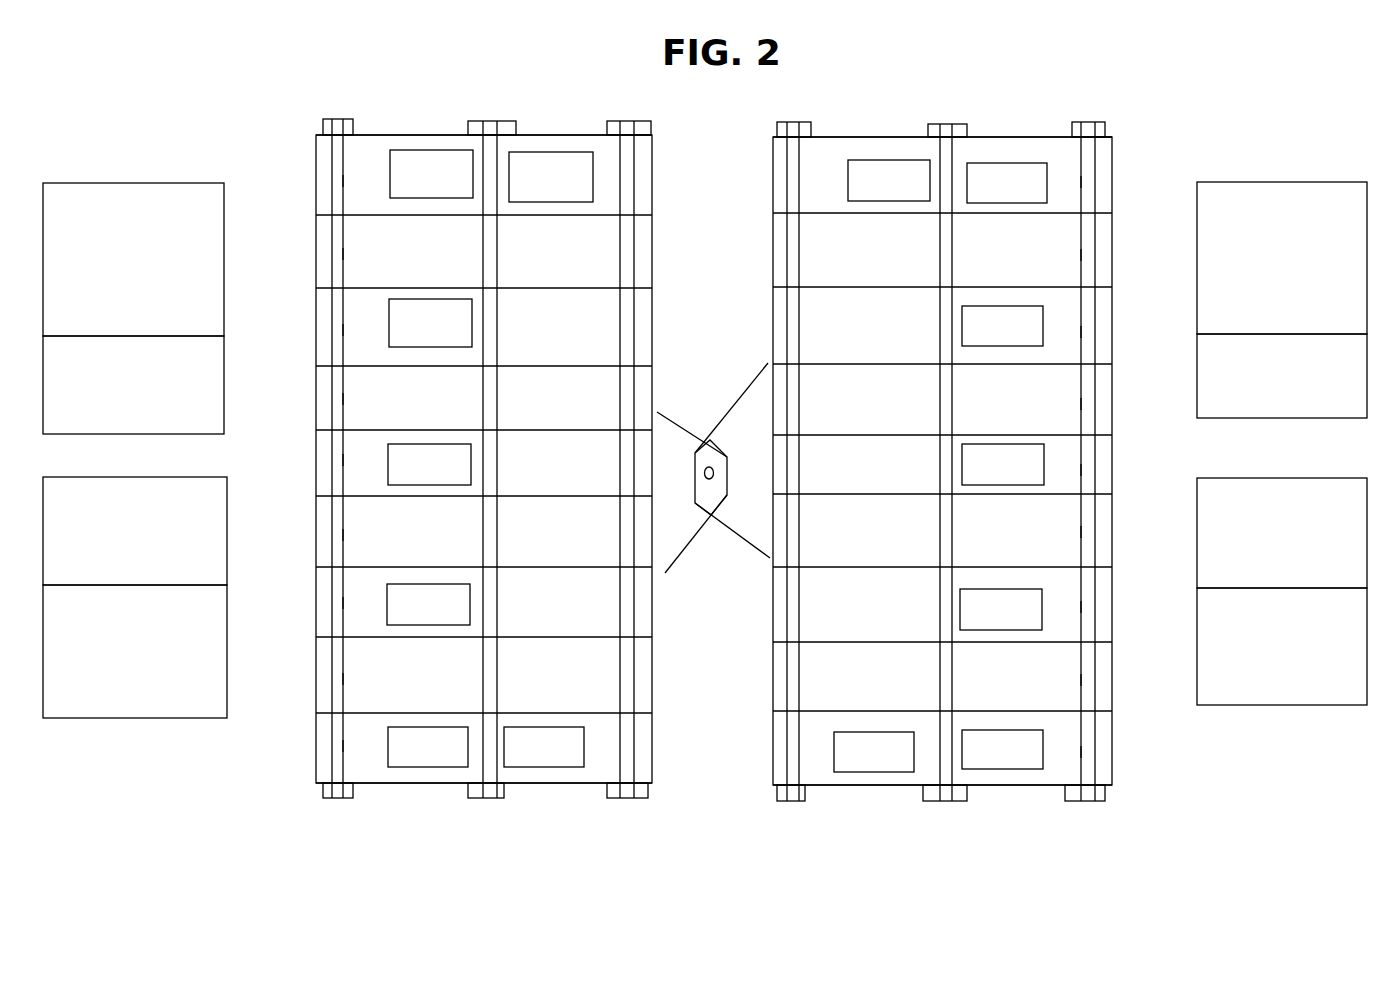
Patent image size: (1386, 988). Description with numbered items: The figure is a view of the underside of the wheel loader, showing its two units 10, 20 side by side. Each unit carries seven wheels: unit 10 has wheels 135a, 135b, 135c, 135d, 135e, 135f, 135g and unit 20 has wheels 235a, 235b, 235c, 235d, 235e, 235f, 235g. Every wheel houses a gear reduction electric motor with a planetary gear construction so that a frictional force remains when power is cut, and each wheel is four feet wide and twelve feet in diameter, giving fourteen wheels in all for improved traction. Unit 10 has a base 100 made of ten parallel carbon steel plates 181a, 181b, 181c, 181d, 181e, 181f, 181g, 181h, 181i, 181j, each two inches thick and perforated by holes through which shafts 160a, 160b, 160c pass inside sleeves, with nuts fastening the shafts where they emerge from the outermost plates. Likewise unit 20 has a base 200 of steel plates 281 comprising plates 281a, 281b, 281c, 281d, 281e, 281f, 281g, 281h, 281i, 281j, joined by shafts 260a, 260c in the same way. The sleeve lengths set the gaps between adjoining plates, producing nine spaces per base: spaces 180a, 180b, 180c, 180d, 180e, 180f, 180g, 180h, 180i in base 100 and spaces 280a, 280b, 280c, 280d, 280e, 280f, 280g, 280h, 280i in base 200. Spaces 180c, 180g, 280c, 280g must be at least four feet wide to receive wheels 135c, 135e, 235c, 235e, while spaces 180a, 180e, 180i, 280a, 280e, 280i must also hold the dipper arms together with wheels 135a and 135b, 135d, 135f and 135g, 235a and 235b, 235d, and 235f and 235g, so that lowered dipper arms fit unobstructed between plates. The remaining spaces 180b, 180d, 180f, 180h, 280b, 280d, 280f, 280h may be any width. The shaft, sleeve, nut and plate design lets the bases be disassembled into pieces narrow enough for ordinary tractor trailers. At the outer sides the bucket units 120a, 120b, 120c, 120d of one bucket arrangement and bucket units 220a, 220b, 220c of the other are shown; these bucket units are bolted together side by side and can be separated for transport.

The unit 10 is at (474, 920).
The unit 20 is at (966, 912).
The base 100 is at (652, 107).
The base 200 is at (1110, 102).
The bucket unit 120a is at (133, 259).
The bucket unit 120b is at (133, 385).
The bucket unit 120c is at (135, 531).
The bucket unit 120d is at (135, 651).
The bucket unit 220a is at (1282, 258).
The bucket unit 220b is at (1282, 376).
The bucket unit 220c is at (1282, 591).
The wheel 135a is at (431, 174).
The wheel 135b is at (551, 177).
The wheel 135c is at (430, 323).
The wheel 135d is at (429, 464).
The wheel 135e is at (428, 604).
The wheel 135f is at (428, 747).
The wheel 135g is at (544, 747).
The wheel 235a is at (889, 180).
The wheel 235b is at (1007, 183).
The wheel 235c is at (1002, 326).
The wheel 235d is at (1003, 464).
The wheel 235e is at (1001, 609).
The wheel 235f is at (1002, 749).
The wheel 235g is at (874, 752).
The shaft 160a is at (334, 766).
The shaft 160b is at (490, 767).
The shaft 160c is at (623, 777).
The shaft 260a is at (945, 773).
The shaft 260c is at (793, 777).
The space 180a is at (350, 181).
The space 180b is at (350, 254).
The space 180c is at (350, 330).
The space 180d is at (350, 399).
The space 180e is at (353, 460).
The space 180f is at (350, 535).
The space 180g is at (356, 603).
The space 180h is at (357, 679).
The space 180i is at (350, 746).
The space 280a is at (1068, 182).
The space 280b is at (1068, 255).
The space 280c is at (1068, 332).
The space 280d is at (1068, 404).
The space 280e is at (1068, 470).
The space 280f is at (1068, 532).
The space 280g is at (1068, 607).
The space 280h is at (1068, 680).
The space 280i is at (1068, 752).
The steel plate 181a is at (580, 135).
The steel plate 181b is at (554, 218).
The steel plate 181c is at (555, 291).
The steel plate 181d is at (554, 369).
The steel plate 181e is at (554, 433).
The steel plate 181f is at (552, 499).
The steel plate 181g is at (551, 570).
The steel plate 181h is at (545, 640).
The steel plate 181i is at (595, 712).
The steel plate 181j is at (555, 786).
The steel plate 281 is at (1112, 133).
The steel plate 281a is at (1023, 137).
The steel plate 281b is at (852, 216).
The steel plate 281c is at (854, 290).
The steel plate 281d is at (853, 367).
The steel plate 281e is at (853, 438).
The steel plate 281f is at (854, 497).
The steel plate 281g is at (854, 570).
The steel plate 281h is at (854, 645).
The steel plate 281i is at (822, 710).
The steel plate 281j is at (855, 788).